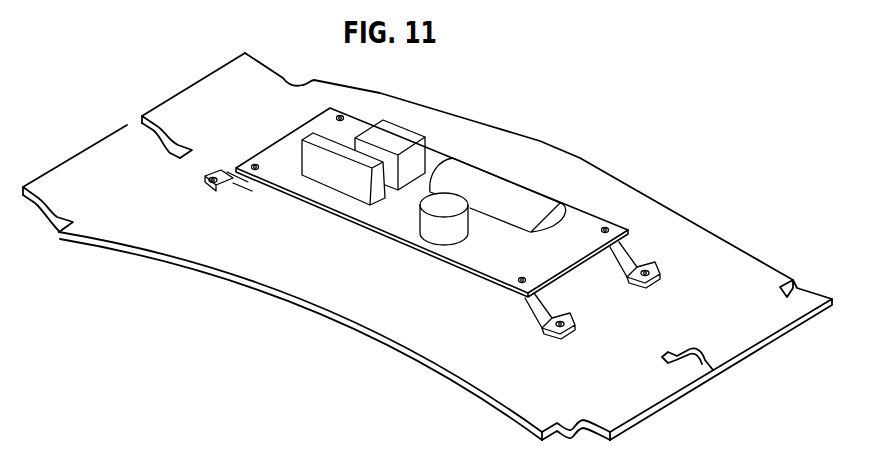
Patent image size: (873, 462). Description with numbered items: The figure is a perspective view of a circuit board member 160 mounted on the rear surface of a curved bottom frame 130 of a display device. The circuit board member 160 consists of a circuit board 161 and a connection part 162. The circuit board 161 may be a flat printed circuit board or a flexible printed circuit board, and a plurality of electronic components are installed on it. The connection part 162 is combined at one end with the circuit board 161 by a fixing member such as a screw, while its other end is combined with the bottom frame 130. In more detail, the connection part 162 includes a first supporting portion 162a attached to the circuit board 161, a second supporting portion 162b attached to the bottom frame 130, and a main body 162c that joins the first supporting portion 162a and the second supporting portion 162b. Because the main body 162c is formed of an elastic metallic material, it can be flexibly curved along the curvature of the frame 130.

The bottom frame 130 is at (693, 268).
The circuit board member 160 is at (390, 276).
The circuit board 161 is at (390, 215).
The connection part 162 is at (390, 292).
The first supporting portion 162a is at (252, 182).
The second supporting portion 162b is at (207, 190).
The main body 162c is at (230, 187).